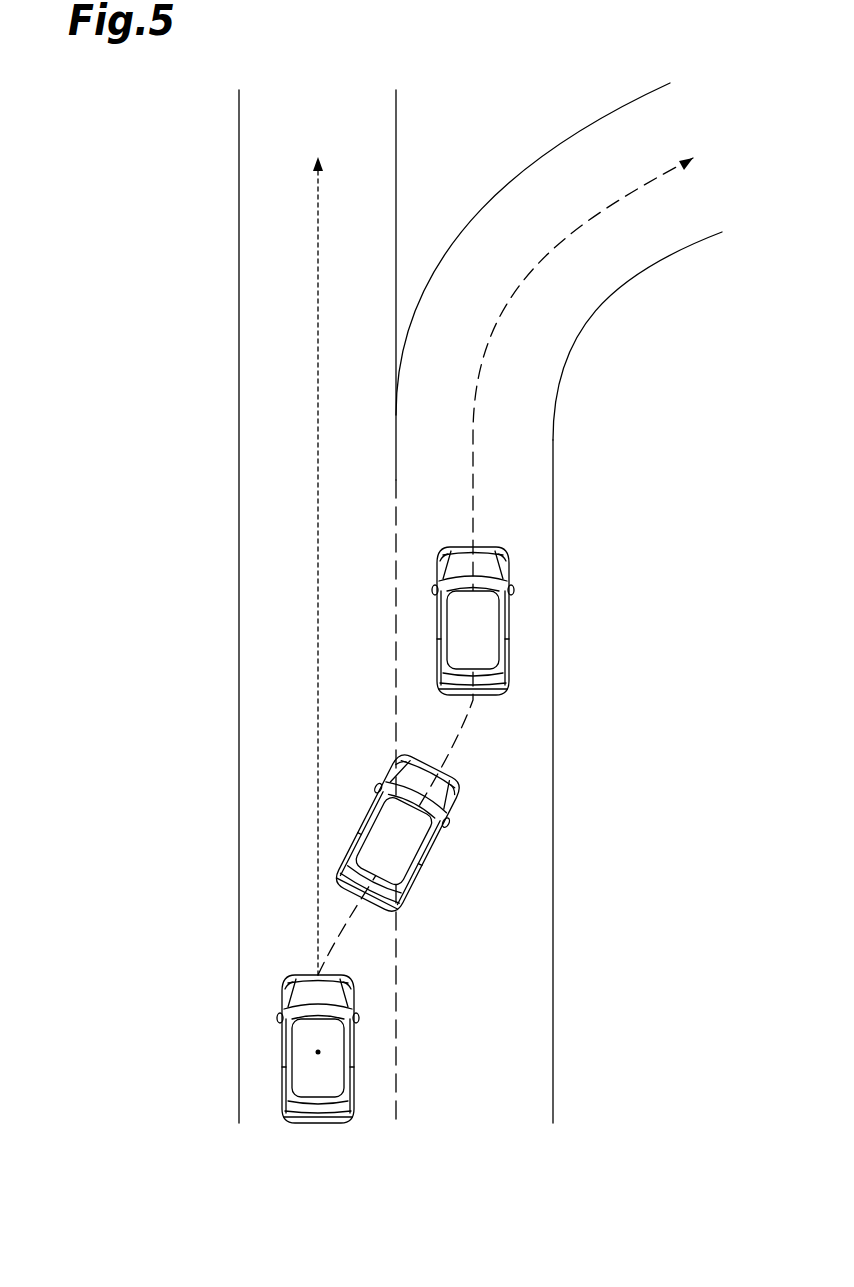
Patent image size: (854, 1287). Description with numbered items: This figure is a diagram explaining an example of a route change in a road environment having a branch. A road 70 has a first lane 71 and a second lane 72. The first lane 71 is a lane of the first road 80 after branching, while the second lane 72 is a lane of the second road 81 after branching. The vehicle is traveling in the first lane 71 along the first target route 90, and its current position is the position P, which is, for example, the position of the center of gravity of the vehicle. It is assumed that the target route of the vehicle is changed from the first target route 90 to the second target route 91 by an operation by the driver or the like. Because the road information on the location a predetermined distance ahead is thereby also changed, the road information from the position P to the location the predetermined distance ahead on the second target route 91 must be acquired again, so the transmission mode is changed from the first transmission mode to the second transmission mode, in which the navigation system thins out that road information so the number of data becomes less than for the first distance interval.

The road 70 is at (553, 880).
The first lane 71 is at (328, 1150).
The second lane 72 is at (481, 1150).
The first road 80 is at (396, 126).
The second road 81 is at (600, 116).
The first target route 90 is at (318, 243).
The second target route 91 is at (580, 214).
The position P is at (316, 1052).